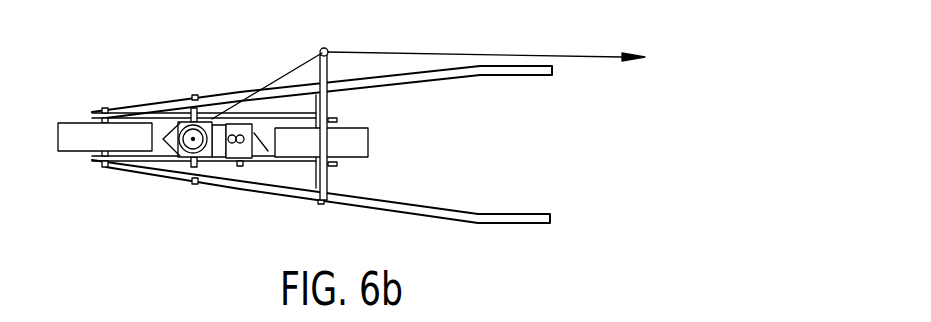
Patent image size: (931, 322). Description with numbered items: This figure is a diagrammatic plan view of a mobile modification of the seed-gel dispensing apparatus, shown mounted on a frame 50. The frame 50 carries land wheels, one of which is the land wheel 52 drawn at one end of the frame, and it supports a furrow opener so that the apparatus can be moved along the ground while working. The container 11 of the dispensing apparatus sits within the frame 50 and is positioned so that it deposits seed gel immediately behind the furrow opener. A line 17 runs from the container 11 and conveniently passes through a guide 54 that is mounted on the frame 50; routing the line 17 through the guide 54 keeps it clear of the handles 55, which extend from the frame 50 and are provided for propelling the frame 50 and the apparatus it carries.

The container 11 is at (182, 126).
The line 17 is at (298, 67).
The frame 50 is at (268, 190).
The land wheel 52 is at (67, 121).
The guide 54 is at (327, 47).
The handles 55 is at (528, 76).